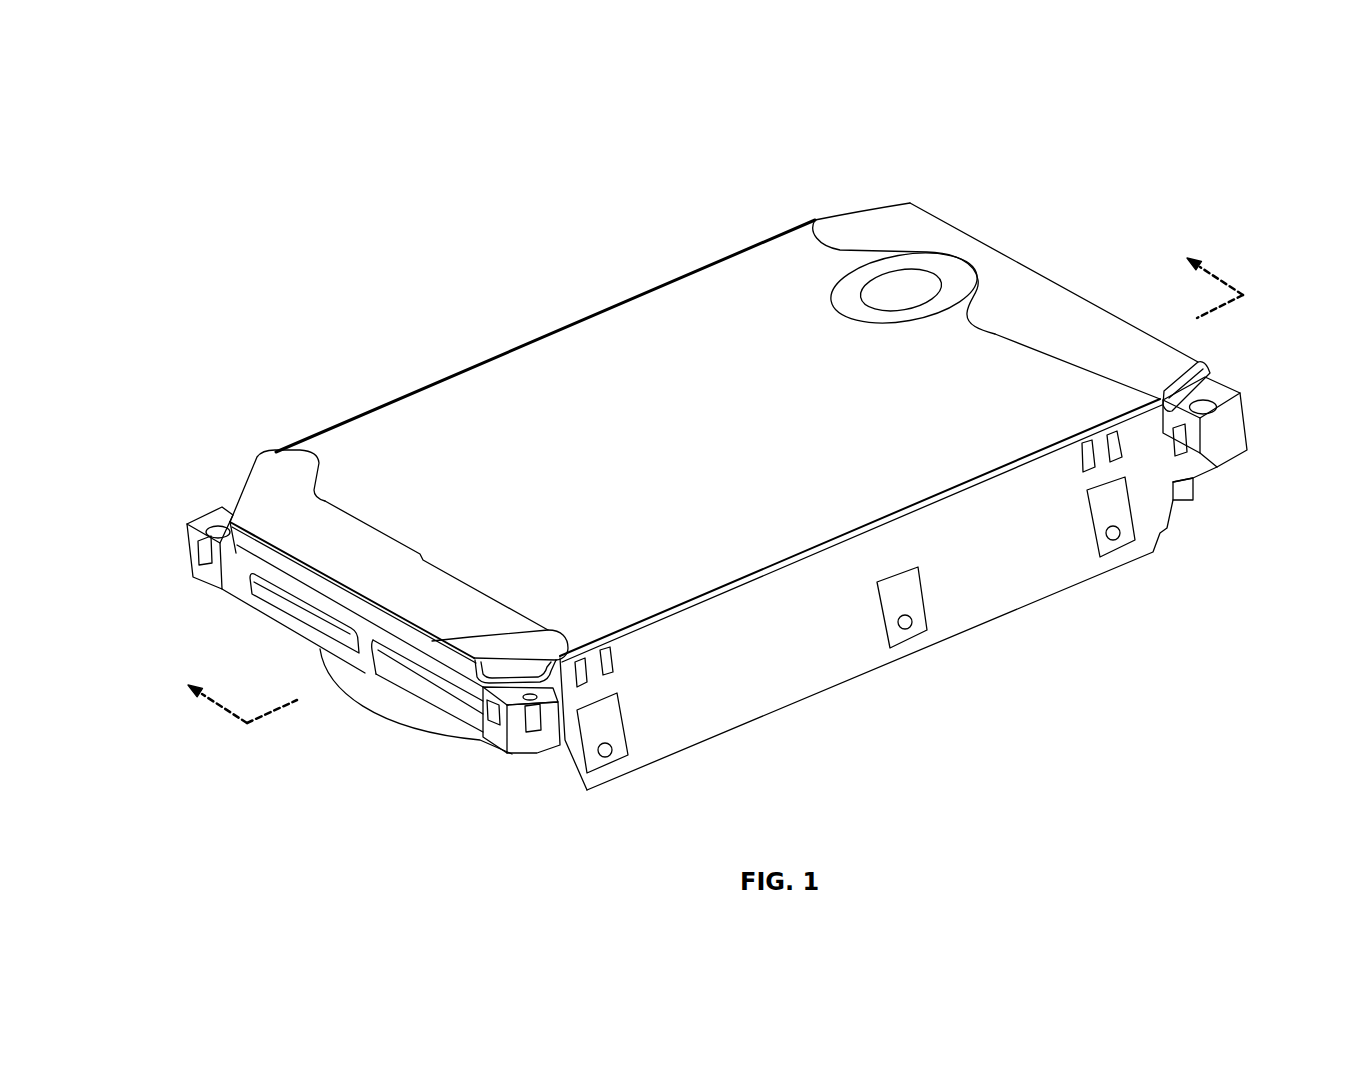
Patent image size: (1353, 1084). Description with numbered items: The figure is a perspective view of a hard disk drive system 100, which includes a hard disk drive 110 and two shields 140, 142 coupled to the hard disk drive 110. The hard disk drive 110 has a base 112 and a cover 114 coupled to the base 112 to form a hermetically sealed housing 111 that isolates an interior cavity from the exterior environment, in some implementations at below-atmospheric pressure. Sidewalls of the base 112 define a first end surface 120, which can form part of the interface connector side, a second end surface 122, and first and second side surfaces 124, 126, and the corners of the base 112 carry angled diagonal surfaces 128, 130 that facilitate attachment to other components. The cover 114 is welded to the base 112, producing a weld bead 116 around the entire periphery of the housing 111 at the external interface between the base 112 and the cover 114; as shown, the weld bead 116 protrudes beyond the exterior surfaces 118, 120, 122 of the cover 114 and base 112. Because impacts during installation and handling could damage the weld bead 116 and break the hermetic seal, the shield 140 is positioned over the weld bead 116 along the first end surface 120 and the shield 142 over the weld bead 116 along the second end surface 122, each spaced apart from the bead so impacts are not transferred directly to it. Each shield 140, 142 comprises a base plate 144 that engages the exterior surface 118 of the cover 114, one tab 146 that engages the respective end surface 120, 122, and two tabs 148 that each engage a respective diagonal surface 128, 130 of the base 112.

The hard disk drive system 100 is at (1053, 142).
The hard disk drive 110 is at (597, 290).
The housing 111 is at (1130, 570).
The base 112 is at (953, 603).
The cover 114 is at (505, 348).
The weld bead 116 is at (707, 600).
The exterior surface of the cover 118 is at (742, 280).
The first end surface 120 is at (240, 583).
The second end surface 122 is at (1243, 410).
The first side surface 124 is at (652, 725).
The second side surface 126 is at (188, 540).
The diagonal surface 128 is at (487, 685).
The diagonal surface 130 is at (1170, 418).
The shield 140 is at (287, 465).
The shield 142 is at (890, 200).
The base plate 144 is at (272, 505).
The tab 146 is at (348, 597).
The tab 148 is at (521, 668).